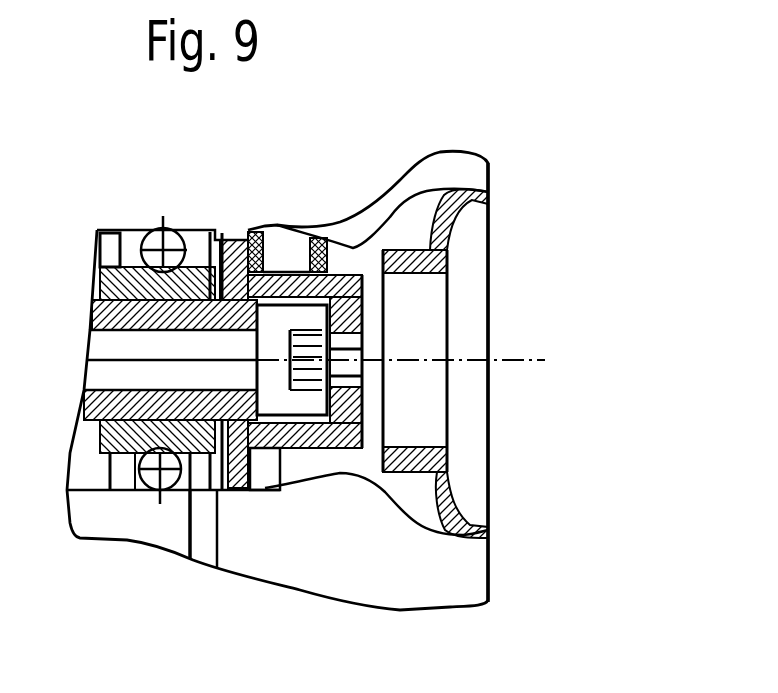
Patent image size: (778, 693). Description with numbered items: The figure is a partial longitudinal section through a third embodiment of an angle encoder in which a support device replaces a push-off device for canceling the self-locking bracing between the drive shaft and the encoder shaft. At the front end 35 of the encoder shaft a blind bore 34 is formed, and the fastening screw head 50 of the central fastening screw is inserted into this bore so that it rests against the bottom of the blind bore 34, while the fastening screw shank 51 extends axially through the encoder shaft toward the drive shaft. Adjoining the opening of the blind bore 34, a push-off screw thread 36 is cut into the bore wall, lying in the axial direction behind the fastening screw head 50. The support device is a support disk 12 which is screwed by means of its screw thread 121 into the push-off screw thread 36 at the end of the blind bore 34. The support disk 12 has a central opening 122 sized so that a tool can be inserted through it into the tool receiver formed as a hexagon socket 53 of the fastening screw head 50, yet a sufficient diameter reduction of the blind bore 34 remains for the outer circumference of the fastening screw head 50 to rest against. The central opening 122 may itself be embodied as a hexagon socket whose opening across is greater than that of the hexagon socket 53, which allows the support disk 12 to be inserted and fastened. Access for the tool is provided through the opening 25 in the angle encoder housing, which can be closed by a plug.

The support disk 12 is at (362, 310).
The opening 25 is at (417, 420).
The blind bore 34 is at (290, 427).
The front end 35 is at (362, 275).
The push-off screw thread 36 is at (448, 247).
The fastening screw head 50 is at (279, 327).
The fastening screw shank 51 is at (143, 343).
The hexagon socket 53 is at (307, 353).
The screw thread 121 is at (347, 440).
The central opening 122 is at (362, 352).